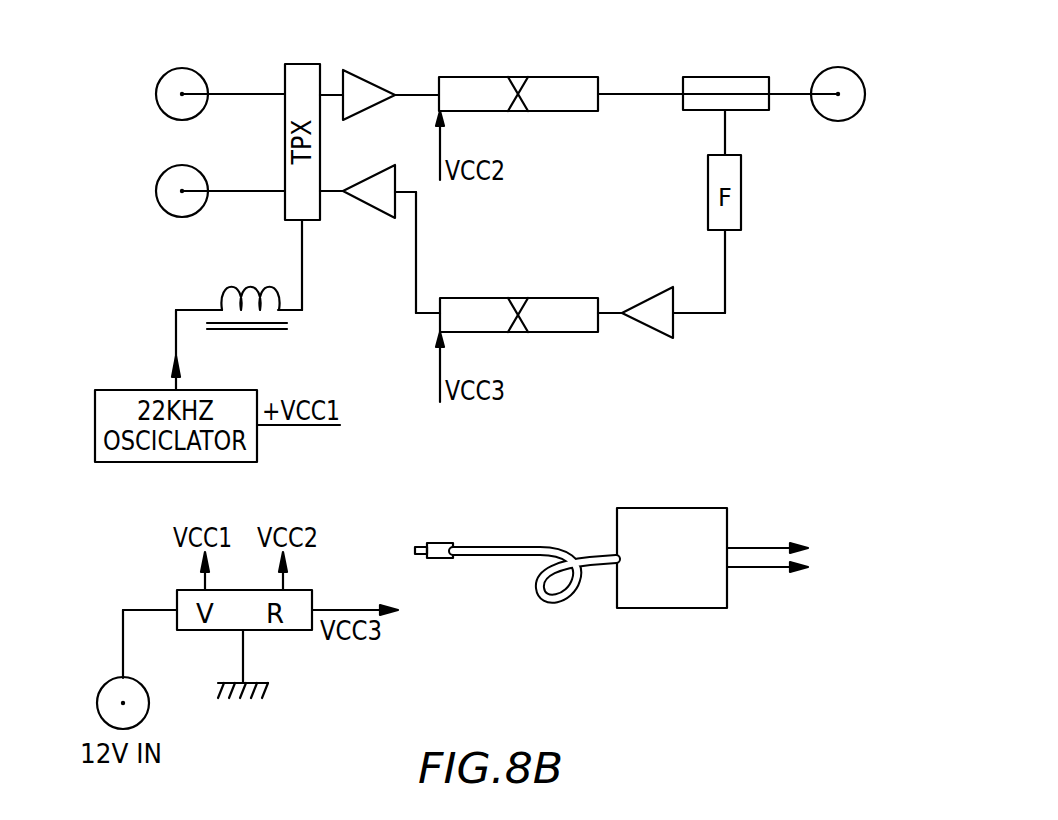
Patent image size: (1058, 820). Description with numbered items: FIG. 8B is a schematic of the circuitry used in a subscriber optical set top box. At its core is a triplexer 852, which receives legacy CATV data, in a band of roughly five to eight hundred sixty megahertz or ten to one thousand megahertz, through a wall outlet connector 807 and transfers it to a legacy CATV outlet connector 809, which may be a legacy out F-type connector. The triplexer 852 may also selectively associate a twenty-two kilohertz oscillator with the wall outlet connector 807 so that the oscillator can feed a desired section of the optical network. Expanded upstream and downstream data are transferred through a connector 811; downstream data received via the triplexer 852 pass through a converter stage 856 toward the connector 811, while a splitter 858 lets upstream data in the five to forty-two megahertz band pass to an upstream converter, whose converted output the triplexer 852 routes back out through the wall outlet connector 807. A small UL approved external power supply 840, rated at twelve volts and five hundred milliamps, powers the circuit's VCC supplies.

The wall outlet connector 807 is at (161, 78).
The legacy CATV outlet connector 809 is at (161, 175).
The connector 811 is at (838, 94).
The triplexer 852 is at (320, 78).
The mixer 856 is at (600, 80).
The splitter 858 is at (770, 80).
The power supply 840 is at (769, 492).